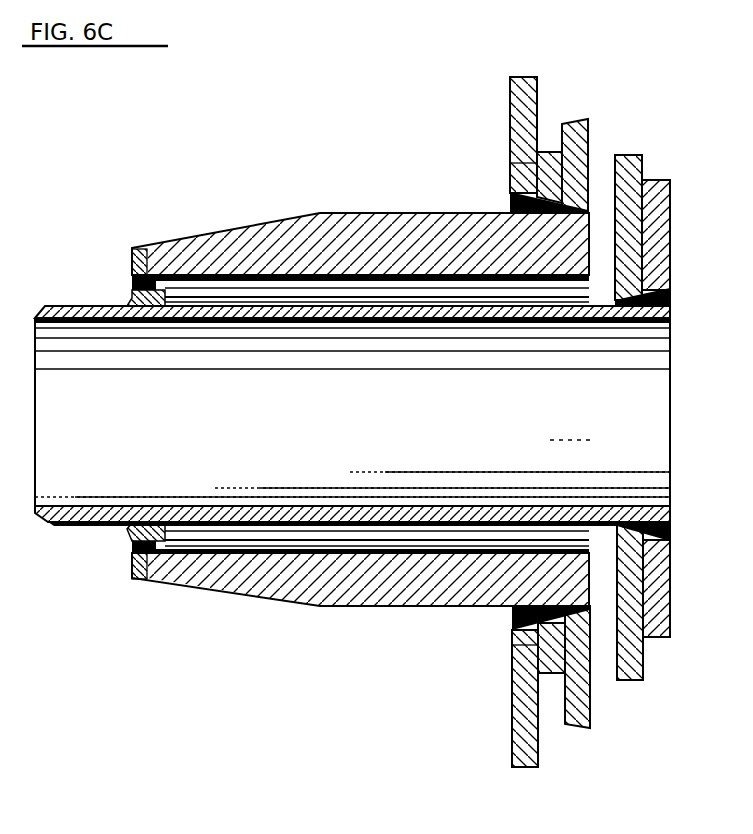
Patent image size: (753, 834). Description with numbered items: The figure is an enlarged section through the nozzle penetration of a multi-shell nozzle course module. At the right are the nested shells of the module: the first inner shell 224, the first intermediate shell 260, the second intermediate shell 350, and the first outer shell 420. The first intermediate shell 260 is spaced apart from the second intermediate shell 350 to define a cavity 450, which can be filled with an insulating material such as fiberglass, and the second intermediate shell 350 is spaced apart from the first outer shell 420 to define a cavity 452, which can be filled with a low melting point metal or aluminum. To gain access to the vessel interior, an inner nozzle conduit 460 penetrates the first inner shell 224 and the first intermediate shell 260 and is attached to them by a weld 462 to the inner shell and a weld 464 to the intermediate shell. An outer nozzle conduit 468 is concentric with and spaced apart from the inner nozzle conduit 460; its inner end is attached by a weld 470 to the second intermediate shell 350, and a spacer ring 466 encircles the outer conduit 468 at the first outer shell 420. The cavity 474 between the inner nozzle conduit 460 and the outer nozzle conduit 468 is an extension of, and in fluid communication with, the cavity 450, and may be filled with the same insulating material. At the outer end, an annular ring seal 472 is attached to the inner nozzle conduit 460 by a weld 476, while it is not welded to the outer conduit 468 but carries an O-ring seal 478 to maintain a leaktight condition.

The first inner shell 224 is at (670, 228).
The first intermediate shell 260 is at (643, 163).
The second intermediate shell 350 is at (586, 128).
The first outer shell 420 is at (524, 77).
The cavity 450 is at (601, 165).
The cavity 452 is at (550, 138).
The inner nozzle conduit 460 is at (388, 416).
The weld 462 is at (670, 294).
The weld 464 is at (628, 312).
The spacer ring 466 is at (520, 163).
The outer nozzle conduit 468 is at (243, 227).
The weld 470 is at (512, 199).
The annular ring seal 472 is at (132, 286).
The cavity 474 is at (240, 296).
The weld 476 is at (130, 303).
The O-ring seal 478 is at (132, 255).